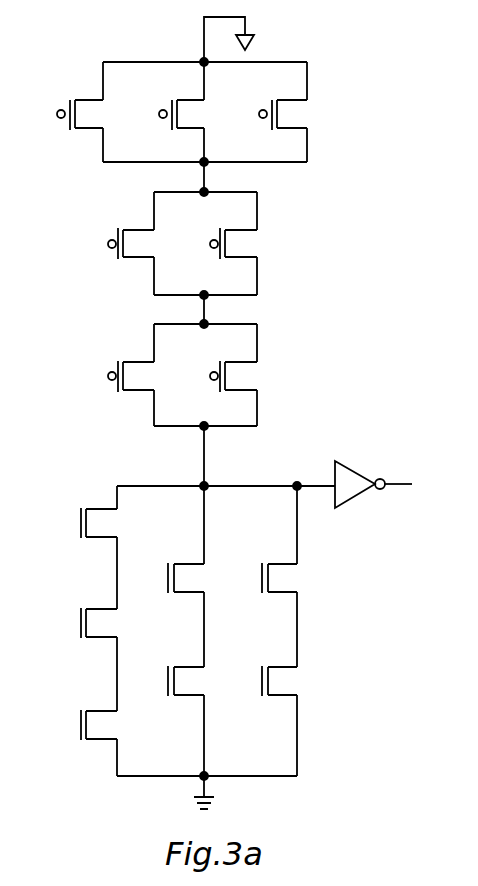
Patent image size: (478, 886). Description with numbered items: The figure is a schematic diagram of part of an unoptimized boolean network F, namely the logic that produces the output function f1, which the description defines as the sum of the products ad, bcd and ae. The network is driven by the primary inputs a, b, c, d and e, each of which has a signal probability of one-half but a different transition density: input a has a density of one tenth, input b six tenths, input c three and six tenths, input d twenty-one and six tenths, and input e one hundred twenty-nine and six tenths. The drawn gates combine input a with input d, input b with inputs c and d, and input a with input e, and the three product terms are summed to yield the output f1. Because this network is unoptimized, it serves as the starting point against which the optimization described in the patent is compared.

The input signal a is at (108, 244).
The input signal b is at (57, 114).
The input signal c is at (159, 114).
The input signal d is at (259, 114).
The input signal e is at (210, 244).
The output function f1 is at (410, 484).